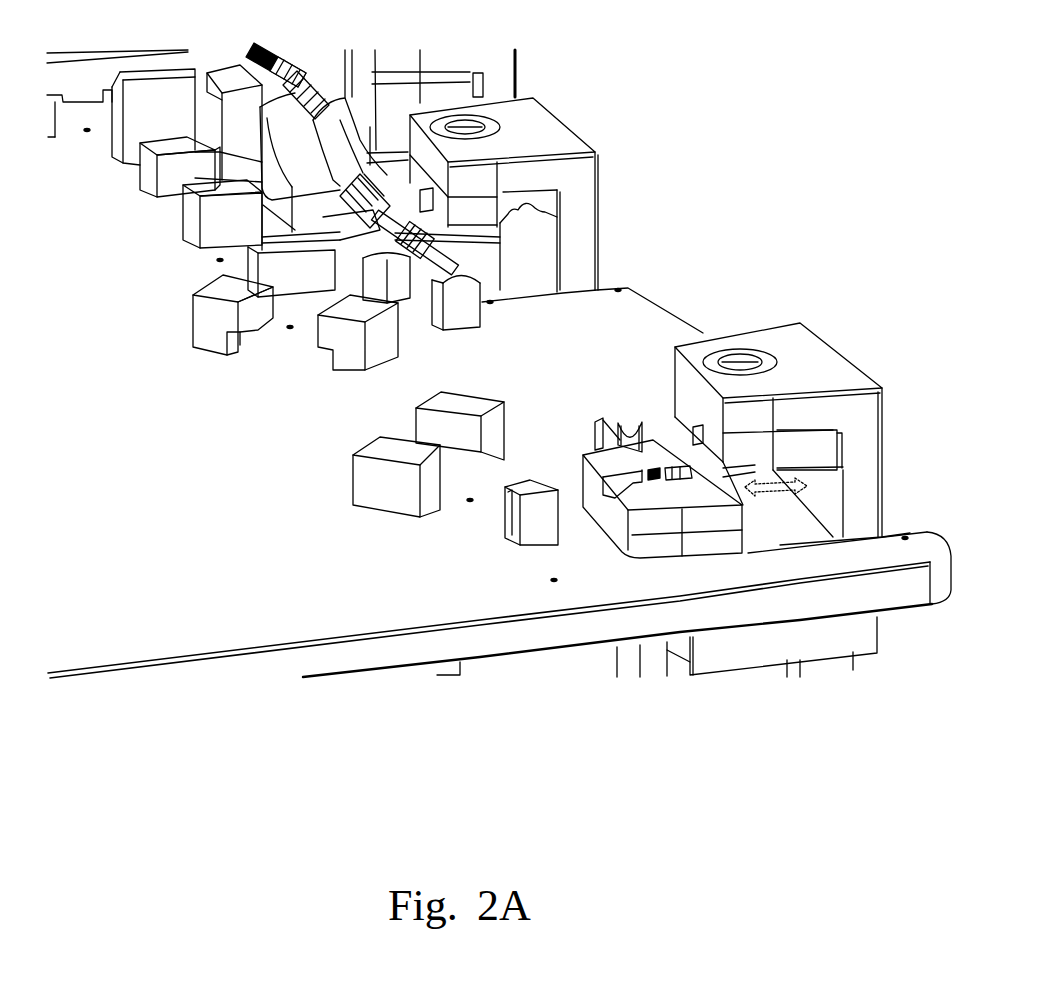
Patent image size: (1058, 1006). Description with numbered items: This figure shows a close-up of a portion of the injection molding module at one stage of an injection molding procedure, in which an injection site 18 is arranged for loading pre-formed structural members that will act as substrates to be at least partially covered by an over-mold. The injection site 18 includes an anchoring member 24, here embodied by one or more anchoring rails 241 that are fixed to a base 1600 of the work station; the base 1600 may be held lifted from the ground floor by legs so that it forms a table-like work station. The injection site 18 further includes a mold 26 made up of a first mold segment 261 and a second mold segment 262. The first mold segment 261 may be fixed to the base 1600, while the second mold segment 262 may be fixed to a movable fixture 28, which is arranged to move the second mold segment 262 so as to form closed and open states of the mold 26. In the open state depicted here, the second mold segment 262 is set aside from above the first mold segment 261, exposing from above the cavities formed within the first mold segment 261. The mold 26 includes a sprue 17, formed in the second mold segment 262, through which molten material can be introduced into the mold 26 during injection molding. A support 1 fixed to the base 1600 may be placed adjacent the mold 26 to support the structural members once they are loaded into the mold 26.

The injection site 18 is at (597, 95).
The sprue 17 is at (745, 351).
The mold 26 is at (581, 420).
The movable fixture 28 is at (866, 432).
The second mold segment 262 is at (816, 460).
The first mold segment 261 is at (728, 530).
The anchoring member 24 is at (450, 516).
The anchoring rail 241 is at (471, 442).
The support 1 is at (545, 532).
The base 1600 is at (190, 542).